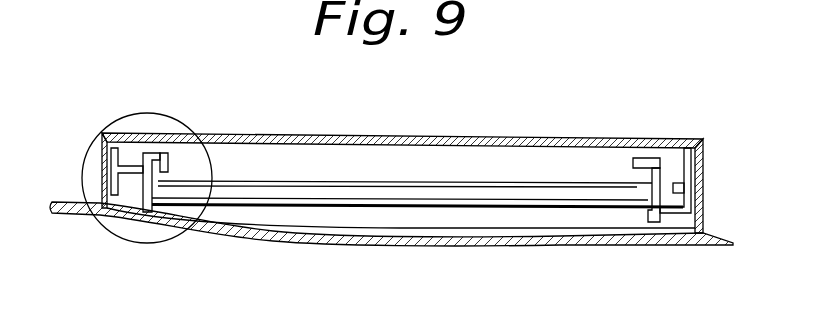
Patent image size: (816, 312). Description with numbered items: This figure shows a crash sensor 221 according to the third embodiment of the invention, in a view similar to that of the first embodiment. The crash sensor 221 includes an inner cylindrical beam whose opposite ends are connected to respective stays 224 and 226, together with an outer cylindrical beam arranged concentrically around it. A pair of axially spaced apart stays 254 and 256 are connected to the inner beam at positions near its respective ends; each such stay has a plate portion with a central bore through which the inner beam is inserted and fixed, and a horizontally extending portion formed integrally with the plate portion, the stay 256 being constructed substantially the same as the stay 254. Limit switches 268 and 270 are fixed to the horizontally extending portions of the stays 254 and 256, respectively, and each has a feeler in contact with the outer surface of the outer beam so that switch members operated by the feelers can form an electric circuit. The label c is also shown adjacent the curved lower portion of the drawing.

The crash sensor 221 is at (569, 193).
The stay 224 is at (112, 218).
The stay 226 is at (670, 190).
The stay 254 is at (154, 186).
The stay 256 is at (650, 222).
The limit switch 268 is at (170, 166).
The limit switch 270 is at (652, 170).
The curved skin c is at (95, 223).